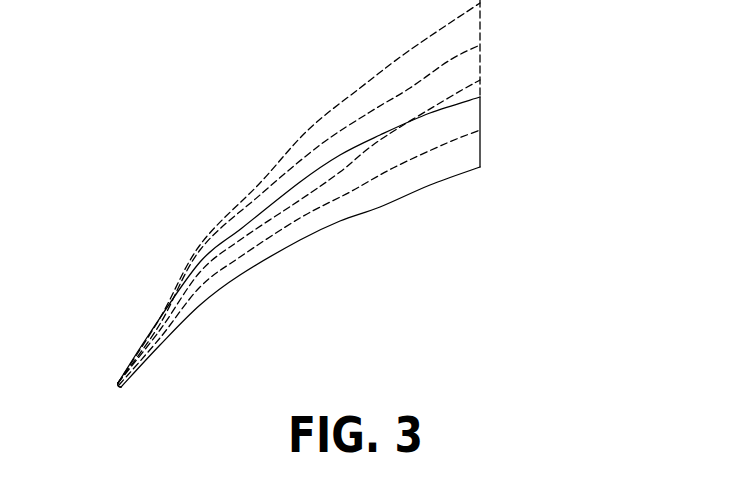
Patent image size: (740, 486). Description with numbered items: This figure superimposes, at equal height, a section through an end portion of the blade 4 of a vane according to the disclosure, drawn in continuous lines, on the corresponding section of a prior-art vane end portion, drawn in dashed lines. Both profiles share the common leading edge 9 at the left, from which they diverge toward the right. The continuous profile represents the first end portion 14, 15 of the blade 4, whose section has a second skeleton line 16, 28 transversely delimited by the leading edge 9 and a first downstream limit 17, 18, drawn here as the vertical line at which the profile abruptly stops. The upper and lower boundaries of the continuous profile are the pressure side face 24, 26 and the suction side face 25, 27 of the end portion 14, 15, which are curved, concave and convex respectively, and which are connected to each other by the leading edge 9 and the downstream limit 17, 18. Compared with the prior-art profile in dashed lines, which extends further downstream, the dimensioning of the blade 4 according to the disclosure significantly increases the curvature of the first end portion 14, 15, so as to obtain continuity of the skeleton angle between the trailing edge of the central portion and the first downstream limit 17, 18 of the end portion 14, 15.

The blade 4 is at (299, 242).
The leading edge 9 is at (118, 388).
The outer end portion 14 is at (299, 242).
The inner end portion 15 is at (393, 182).
The second skeleton line 16 is at (314, 257).
The second skeleton line 28 is at (447, 143).
The outer downstream limit 17 is at (539, 83).
The inner downstream limit 18 is at (480, 130).
The pressure side face 24 is at (299, 231).
The pressure side face 26 is at (270, 258).
The suction side face 25 is at (299, 193).
The suction side face 27 is at (333, 165).